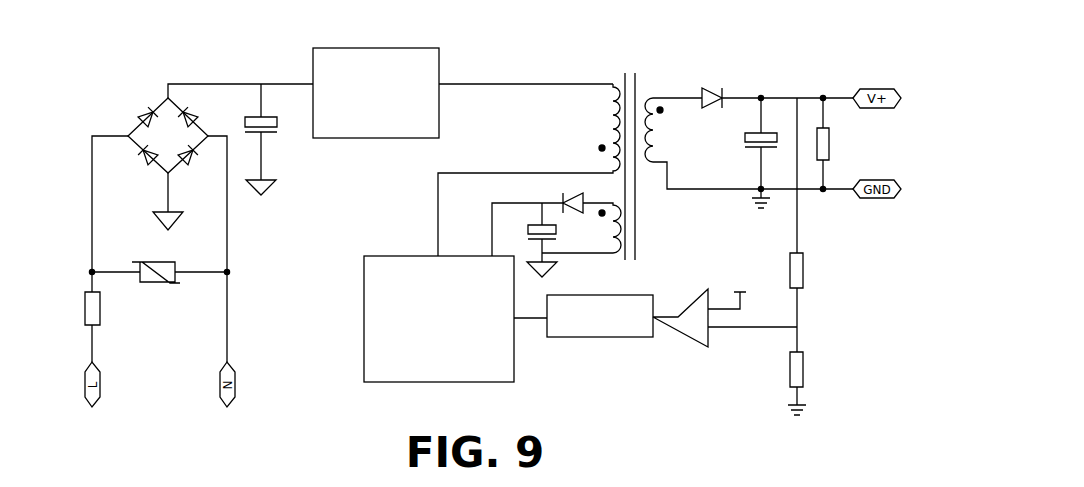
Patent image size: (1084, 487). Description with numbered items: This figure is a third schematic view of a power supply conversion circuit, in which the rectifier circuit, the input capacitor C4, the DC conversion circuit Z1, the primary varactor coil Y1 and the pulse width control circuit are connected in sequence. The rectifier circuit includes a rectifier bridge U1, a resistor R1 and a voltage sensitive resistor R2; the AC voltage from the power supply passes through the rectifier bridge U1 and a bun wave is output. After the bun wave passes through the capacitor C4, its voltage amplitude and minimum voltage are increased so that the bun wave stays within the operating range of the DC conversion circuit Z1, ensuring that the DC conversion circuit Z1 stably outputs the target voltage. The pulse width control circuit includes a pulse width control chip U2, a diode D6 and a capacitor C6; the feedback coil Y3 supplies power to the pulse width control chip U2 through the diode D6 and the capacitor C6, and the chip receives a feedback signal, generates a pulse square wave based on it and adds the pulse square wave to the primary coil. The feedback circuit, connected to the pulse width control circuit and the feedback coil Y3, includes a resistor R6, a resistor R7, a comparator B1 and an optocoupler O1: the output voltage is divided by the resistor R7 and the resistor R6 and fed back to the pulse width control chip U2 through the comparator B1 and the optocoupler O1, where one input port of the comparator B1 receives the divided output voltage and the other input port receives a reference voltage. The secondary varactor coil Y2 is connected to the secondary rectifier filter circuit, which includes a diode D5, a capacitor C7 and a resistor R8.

The rectifier bridge U1 is at (153, 133).
The input capacitor C4 is at (270, 139).
The DC conversion circuit Z1 is at (376, 82).
The primary varactor coil Y1 is at (529, 170).
The secondary varactor coil Y2 is at (749, 143).
The feedback coil Y3 is at (581, 228).
The diode D6 is at (537, 218).
The capacitor C6 is at (531, 240).
The pulse width control chip U2 is at (439, 331).
The optocoupler O1 is at (583, 333).
The comparator B1 is at (725, 325).
The diode D5 is at (777, 114).
The capacitor C7 is at (751, 151).
The resistor R8 is at (839, 143).
The resistor R6 is at (815, 225).
The resistor R7 is at (814, 383).
The resistor R1 is at (78, 308).
The voltage sensitive resistor R2 is at (156, 262).